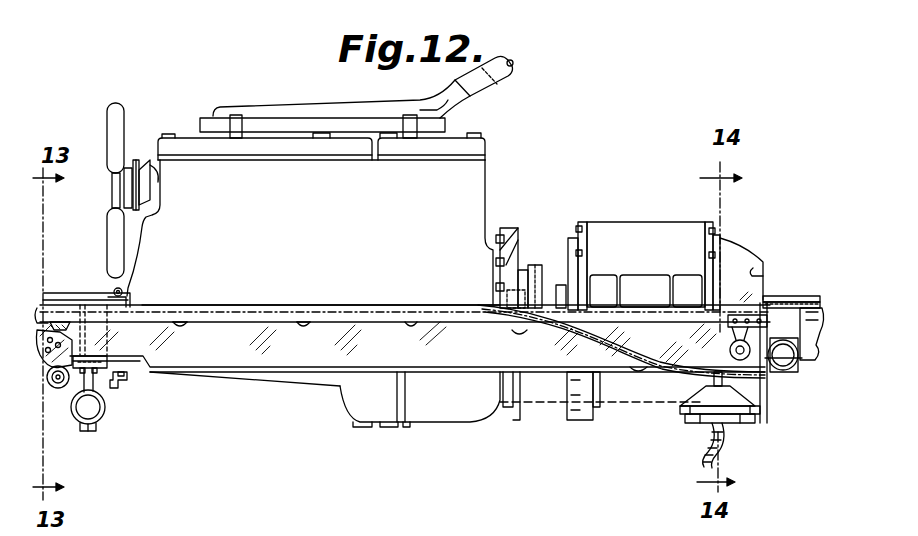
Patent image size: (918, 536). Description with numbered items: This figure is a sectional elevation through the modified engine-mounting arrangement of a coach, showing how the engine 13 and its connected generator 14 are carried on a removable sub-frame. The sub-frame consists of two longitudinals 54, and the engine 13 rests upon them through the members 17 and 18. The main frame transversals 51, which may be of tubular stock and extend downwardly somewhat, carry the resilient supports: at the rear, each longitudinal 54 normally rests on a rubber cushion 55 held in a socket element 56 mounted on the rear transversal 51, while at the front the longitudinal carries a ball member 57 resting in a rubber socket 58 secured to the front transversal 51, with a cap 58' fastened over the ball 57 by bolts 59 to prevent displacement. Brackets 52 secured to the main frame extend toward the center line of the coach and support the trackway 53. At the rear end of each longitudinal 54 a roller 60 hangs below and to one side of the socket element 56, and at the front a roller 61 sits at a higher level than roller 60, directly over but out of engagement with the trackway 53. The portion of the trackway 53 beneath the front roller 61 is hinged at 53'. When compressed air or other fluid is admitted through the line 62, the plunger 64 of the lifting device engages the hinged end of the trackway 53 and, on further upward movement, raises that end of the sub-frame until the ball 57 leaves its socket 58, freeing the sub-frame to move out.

The engine 13 is at (320, 180).
The generator 14 is at (640, 240).
The engine supporting member 17 is at (113, 289).
The engine supporting member 18 is at (520, 264).
The transversal 51 is at (787, 373).
The bracket 52 is at (300, 330).
The trackway 53 is at (564, 388).
The hinge of trackway 53' is at (624, 415).
The sub-frame longitudinal 54 is at (215, 340).
The rubber cushion 55 is at (120, 364).
The socket element 56 is at (97, 377).
The ball member 57 is at (808, 361).
The rubber socket 58 is at (797, 286).
The cap 58' is at (799, 270).
The bolt 59 is at (780, 296).
The rear roller 60 is at (62, 389).
The front roller 61 is at (731, 352).
The fluid line 62 is at (720, 456).
The plunger 64 is at (712, 380).